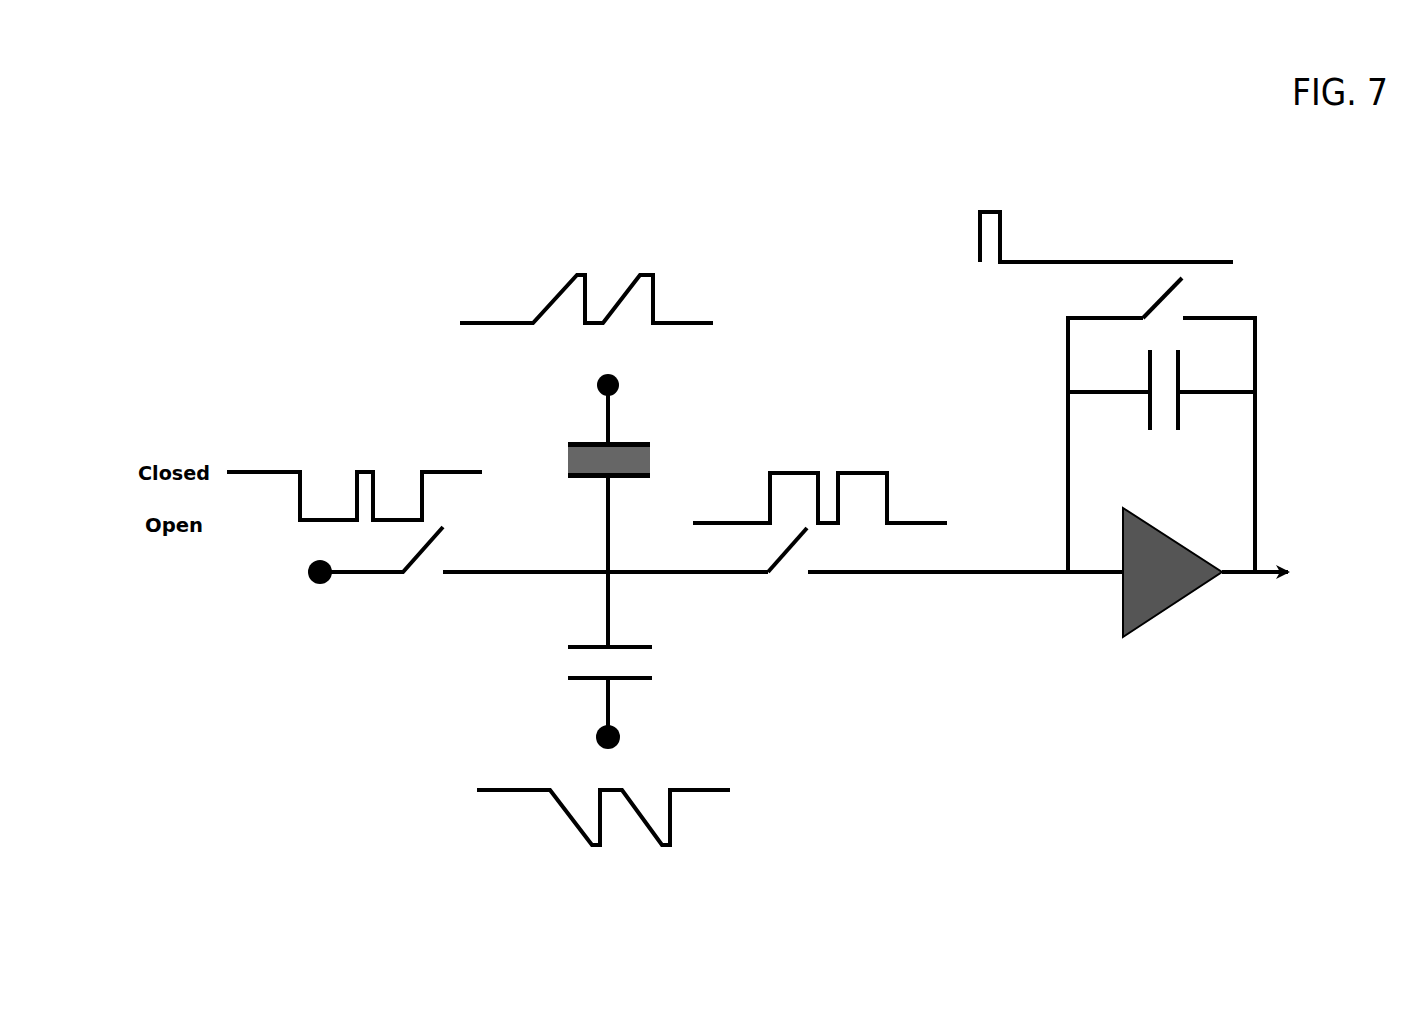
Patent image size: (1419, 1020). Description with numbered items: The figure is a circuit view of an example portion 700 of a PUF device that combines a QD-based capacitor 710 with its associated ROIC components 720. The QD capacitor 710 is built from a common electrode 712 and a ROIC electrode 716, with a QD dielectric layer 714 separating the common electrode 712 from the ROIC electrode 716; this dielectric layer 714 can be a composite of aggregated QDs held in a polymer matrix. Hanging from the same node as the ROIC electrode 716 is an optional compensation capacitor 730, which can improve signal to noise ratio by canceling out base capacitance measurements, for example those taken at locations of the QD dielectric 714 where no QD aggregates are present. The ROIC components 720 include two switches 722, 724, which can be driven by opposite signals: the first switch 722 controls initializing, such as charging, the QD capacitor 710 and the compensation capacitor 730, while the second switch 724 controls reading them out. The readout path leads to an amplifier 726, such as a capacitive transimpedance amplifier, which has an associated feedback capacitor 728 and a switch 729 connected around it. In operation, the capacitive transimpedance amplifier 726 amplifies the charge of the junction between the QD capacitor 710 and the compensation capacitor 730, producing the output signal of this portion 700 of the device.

The portion of a PUF device 700 is at (280, 107).
The QD capacitor 710 is at (688, 443).
The common electrode 712 is at (602, 393).
The QD dielectric layer 714 is at (590, 462).
The ROIC electrode 716 is at (606, 528).
The ROIC components 720 is at (987, 461).
The switch 722 is at (420, 585).
The switch 724 is at (823, 610).
The amplifier 726 is at (1125, 617).
The feedback capacitor 728 is at (1223, 467).
The switch 729 is at (1192, 307).
The compensation capacitor 730 is at (650, 693).